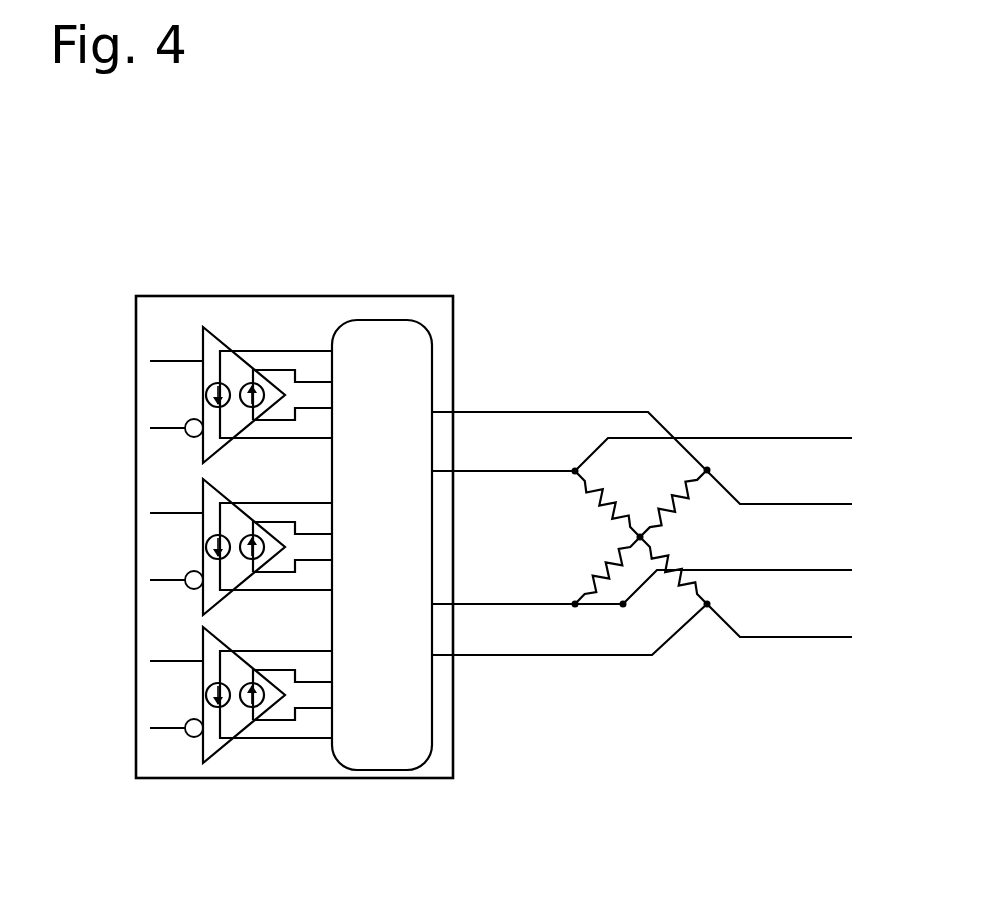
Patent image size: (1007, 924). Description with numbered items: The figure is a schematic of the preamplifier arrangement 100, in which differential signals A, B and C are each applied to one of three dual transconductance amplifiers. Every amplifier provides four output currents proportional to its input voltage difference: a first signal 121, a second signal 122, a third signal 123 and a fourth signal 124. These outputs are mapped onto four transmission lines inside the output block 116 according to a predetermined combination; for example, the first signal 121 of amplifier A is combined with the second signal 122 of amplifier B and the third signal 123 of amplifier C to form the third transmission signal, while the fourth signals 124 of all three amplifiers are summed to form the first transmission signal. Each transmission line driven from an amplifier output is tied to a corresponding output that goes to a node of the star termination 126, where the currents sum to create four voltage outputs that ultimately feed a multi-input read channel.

The driver device 100 is at (122, 235).
The output terminal block 116 is at (423, 322).
The first signal 121 is at (265, 350).
The second signal 122 is at (285, 370).
The third signal 123 is at (295, 420).
The fourth signal 124 is at (282, 440).
The star termination 126 is at (705, 416).